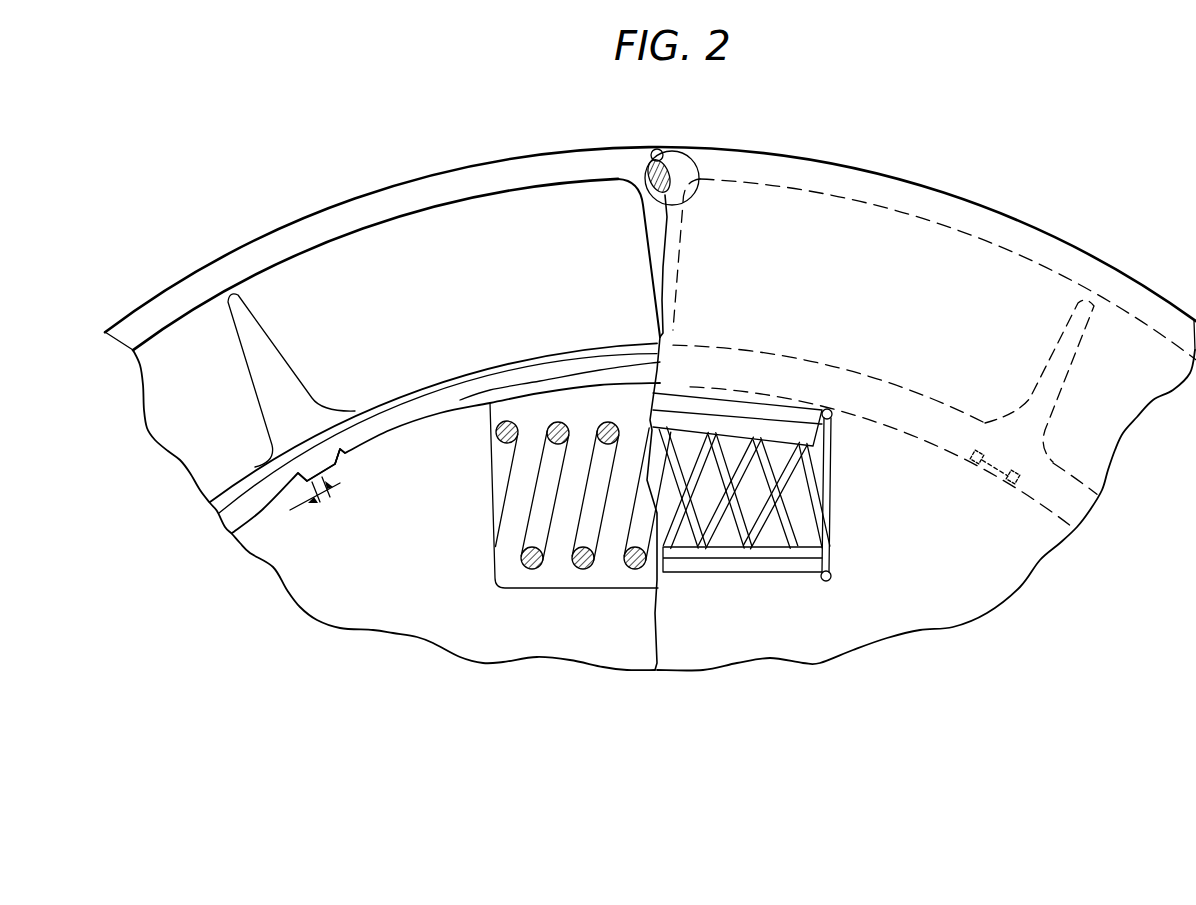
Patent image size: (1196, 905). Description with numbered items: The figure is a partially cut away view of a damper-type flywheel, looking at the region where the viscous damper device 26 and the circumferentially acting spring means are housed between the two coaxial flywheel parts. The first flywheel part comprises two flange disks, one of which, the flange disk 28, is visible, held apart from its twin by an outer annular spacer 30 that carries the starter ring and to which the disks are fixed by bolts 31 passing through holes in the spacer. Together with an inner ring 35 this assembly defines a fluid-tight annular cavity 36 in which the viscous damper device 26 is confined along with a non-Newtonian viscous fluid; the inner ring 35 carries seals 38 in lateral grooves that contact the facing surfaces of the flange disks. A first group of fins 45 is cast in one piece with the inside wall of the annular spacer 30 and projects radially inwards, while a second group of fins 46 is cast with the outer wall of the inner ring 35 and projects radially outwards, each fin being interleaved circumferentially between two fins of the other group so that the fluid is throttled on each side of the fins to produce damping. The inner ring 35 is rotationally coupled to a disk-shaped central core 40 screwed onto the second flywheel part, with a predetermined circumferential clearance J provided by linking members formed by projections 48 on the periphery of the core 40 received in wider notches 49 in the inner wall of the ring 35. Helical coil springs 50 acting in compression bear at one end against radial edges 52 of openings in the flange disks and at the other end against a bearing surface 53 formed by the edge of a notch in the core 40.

The viscous damper device 26 is at (500, 222).
The flange disk 28 is at (965, 205).
The outer annular spacer 30 is at (195, 282).
The bolt 31 is at (660, 151).
The inner ring 35 is at (430, 410).
The fluid-tight annular cavity 36 is at (347, 238).
The seal 38 is at (503, 373).
The disk-shaped central core 40 is at (381, 639).
The first group of fins 45 is at (651, 258).
The second group of fins 46 is at (279, 372).
The projection 48 is at (318, 458).
The notch 49 is at (341, 455).
The helical coil spring 50 is at (530, 580).
The radial edge 52 is at (826, 506).
The bearing surface 53 is at (494, 488).